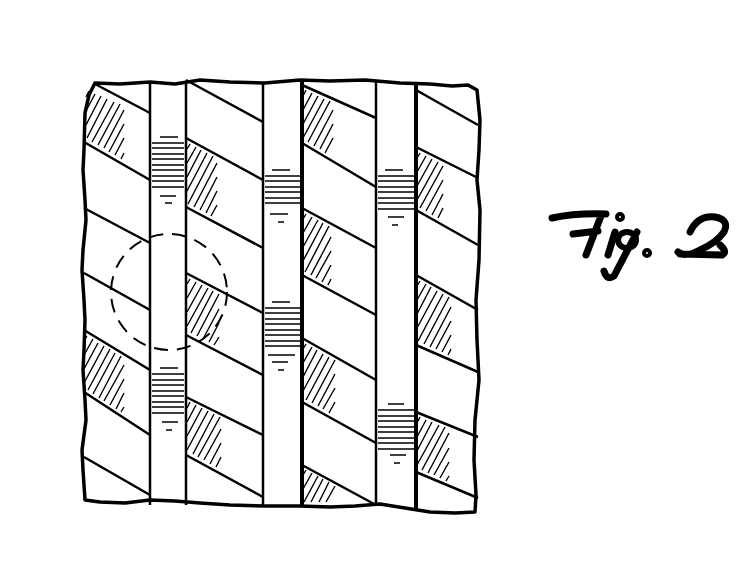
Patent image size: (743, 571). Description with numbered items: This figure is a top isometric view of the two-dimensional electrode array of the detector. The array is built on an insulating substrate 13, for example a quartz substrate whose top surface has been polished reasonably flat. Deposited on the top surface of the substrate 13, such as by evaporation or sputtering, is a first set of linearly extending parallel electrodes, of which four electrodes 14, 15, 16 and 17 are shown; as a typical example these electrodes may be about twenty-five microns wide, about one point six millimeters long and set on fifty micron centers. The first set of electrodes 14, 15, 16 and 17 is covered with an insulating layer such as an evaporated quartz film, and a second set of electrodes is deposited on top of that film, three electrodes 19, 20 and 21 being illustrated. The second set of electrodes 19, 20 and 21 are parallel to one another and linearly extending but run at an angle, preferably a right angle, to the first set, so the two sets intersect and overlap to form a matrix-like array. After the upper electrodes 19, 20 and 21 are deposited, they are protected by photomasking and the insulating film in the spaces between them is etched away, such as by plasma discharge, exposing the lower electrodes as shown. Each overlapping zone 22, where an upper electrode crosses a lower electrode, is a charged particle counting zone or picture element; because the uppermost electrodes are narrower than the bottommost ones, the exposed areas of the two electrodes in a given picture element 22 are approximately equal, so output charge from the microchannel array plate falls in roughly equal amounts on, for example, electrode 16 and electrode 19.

The insulating substrate 13 is at (462, 277).
The electrode 14 is at (462, 207).
The electrode 15 is at (465, 335).
The electrode 16 is at (462, 462).
The electrode 17 is at (258, 475).
The electrode 19 is at (163, 93).
The electrode 20 is at (277, 95).
The electrode 21 is at (397, 97).
The overlapping zone 22 is at (112, 272).